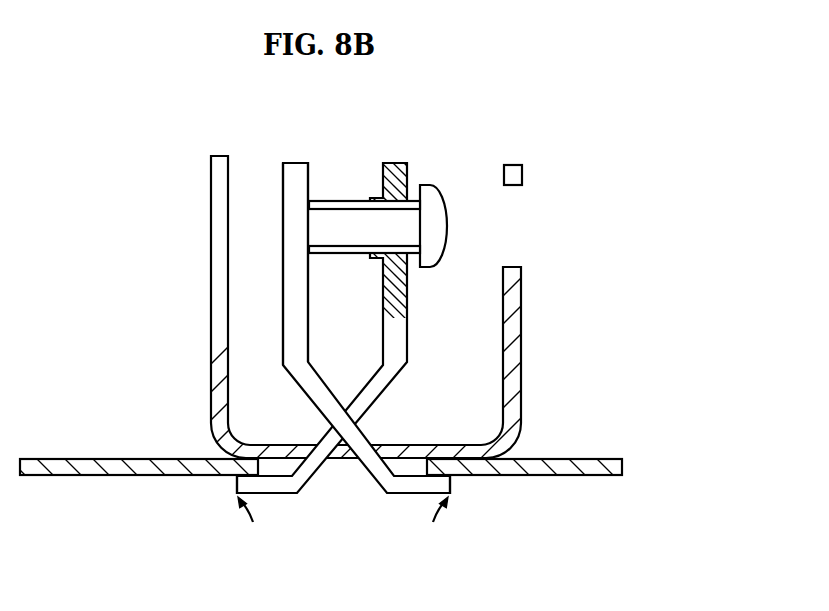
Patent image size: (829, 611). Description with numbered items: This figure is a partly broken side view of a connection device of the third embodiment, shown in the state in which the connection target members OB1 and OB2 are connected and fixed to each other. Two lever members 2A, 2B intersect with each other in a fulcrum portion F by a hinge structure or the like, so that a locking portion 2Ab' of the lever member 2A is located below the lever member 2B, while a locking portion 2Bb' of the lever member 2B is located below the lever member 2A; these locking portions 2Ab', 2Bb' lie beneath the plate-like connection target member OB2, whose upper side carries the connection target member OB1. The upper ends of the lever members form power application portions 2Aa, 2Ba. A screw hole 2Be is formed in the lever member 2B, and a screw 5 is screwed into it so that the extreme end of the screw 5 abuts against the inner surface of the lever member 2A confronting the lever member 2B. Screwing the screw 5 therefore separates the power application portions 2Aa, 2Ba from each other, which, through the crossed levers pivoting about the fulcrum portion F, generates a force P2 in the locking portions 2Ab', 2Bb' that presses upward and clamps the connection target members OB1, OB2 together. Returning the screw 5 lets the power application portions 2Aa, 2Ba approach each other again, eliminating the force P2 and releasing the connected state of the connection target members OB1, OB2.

The lever member 2A is at (299, 327).
The lever member 2B is at (393, 327).
The power application portion 2Aa is at (283, 317).
The power application portion 2Ba is at (407, 330).
The screw hole 2Be is at (395, 247).
The locking portion 2Ab' is at (418, 521).
The locking portion 2Bb' is at (271, 521).
The screw 5 is at (447, 212).
The connection target member OB1 is at (211, 230).
The connection target member OB2 is at (80, 459).
The force P2 is at (342, 518).
The fulcrum portion F is at (343, 465).